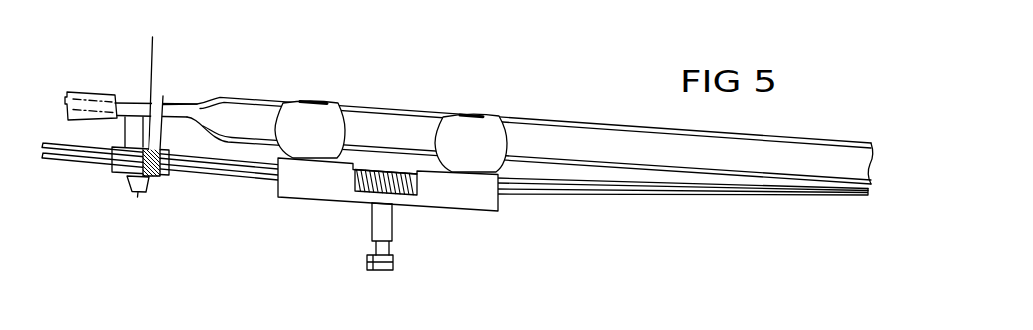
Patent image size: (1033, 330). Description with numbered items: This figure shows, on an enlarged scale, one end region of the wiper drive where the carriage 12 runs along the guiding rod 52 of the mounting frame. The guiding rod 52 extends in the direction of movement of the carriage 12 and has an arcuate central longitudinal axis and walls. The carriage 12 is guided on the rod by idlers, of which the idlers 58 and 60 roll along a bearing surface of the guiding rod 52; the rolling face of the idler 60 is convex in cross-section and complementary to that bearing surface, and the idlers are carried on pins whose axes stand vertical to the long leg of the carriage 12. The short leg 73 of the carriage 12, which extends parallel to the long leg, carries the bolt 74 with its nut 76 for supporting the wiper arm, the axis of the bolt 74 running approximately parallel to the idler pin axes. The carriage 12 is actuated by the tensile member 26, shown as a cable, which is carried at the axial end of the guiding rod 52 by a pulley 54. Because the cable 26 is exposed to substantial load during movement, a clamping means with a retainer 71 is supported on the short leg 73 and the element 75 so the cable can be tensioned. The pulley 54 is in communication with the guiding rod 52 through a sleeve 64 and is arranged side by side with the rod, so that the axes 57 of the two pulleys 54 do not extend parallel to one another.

The carriage 12 is at (492, 201).
The tensile and/or thrust member 26 is at (770, 196).
The guiding rod 52 is at (655, 128).
The pulley 54 is at (75, 171).
The axis of the pulley 57 is at (150, 72).
The idler 58 is at (328, 122).
The idler 60 is at (492, 128).
The sleeve 64 is at (157, 128).
The retainer 71 is at (413, 203).
The short leg 73 is at (413, 203).
The bolt 74 is at (375, 228).
The supporting element 75 is at (355, 188).
The nut 76 is at (368, 272).